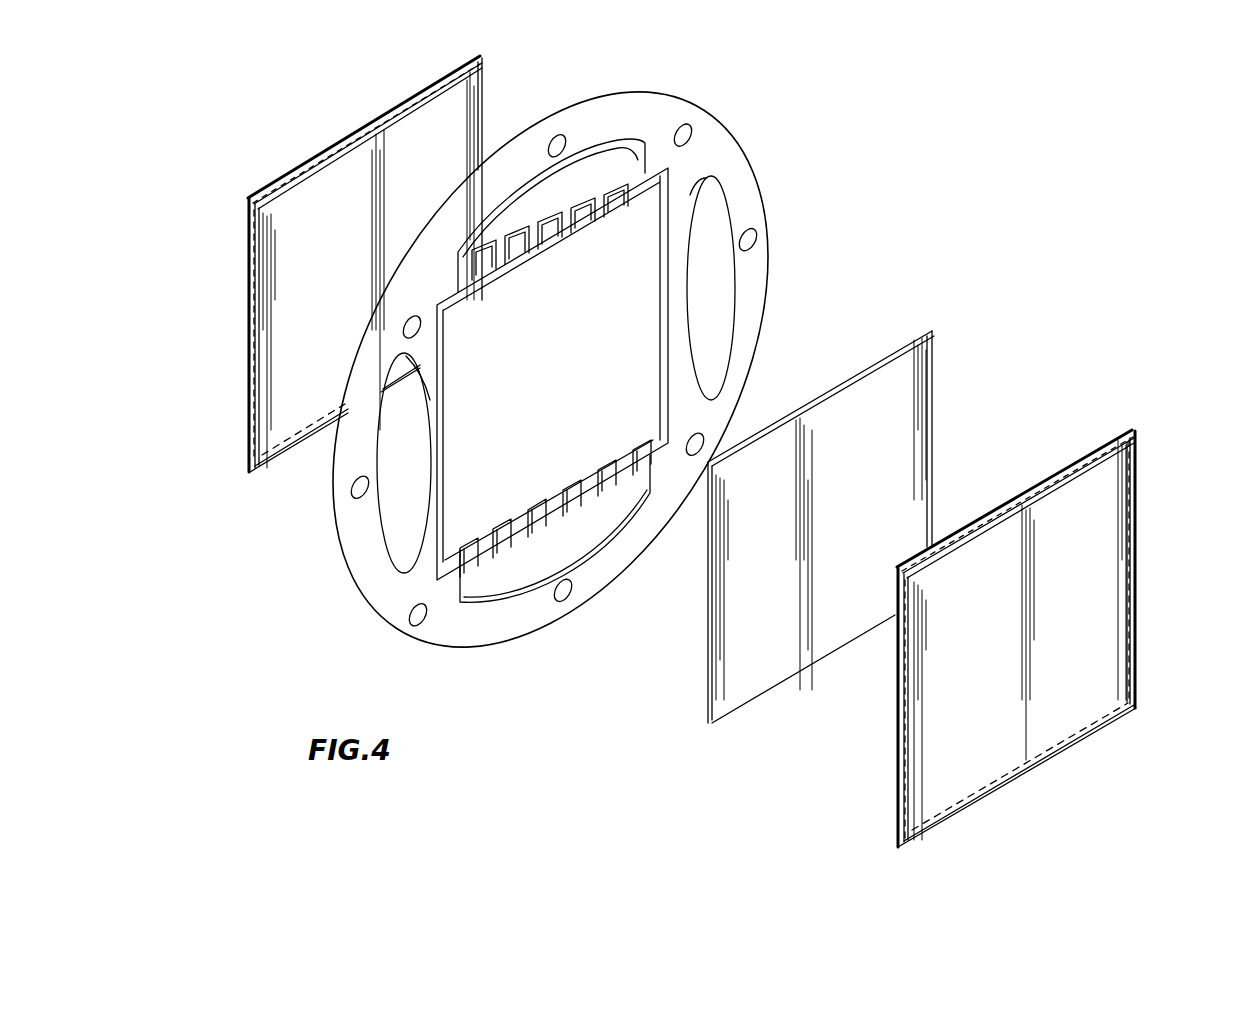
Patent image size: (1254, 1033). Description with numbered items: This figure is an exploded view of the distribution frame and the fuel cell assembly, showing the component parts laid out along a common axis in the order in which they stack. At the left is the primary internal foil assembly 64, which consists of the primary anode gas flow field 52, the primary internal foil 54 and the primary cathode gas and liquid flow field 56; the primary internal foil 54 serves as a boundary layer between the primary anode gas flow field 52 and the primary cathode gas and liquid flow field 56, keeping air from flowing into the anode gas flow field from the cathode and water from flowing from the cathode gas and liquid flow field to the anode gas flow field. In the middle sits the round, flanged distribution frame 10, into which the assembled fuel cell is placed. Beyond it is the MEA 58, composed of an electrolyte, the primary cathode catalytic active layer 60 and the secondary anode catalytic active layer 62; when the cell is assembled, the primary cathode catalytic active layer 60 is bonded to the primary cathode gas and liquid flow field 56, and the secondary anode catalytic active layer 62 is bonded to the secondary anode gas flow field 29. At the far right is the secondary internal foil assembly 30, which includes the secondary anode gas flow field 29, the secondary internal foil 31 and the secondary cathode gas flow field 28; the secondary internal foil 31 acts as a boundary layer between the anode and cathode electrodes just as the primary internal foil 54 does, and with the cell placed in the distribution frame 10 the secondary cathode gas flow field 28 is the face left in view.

The distribution frame 10 is at (732, 124).
The secondary cathode gas flow field 28 is at (1010, 611).
The secondary anode gas flow field 29 is at (1055, 468).
The secondary internal foil assembly 30 is at (893, 750).
The secondary internal foil 31 is at (1140, 430).
The primary anode gas flow field 52 is at (379, 256).
The primary internal foil 54 is at (488, 58).
The primary cathode gas and liquid flow field 56 is at (446, 129).
The MEA 58 is at (863, 489).
The primary cathode catalytic active layer 60 is at (828, 380).
The secondary anode catalytic active layer 62 is at (886, 452).
The primary internal foil assembly 64 is at (242, 286).